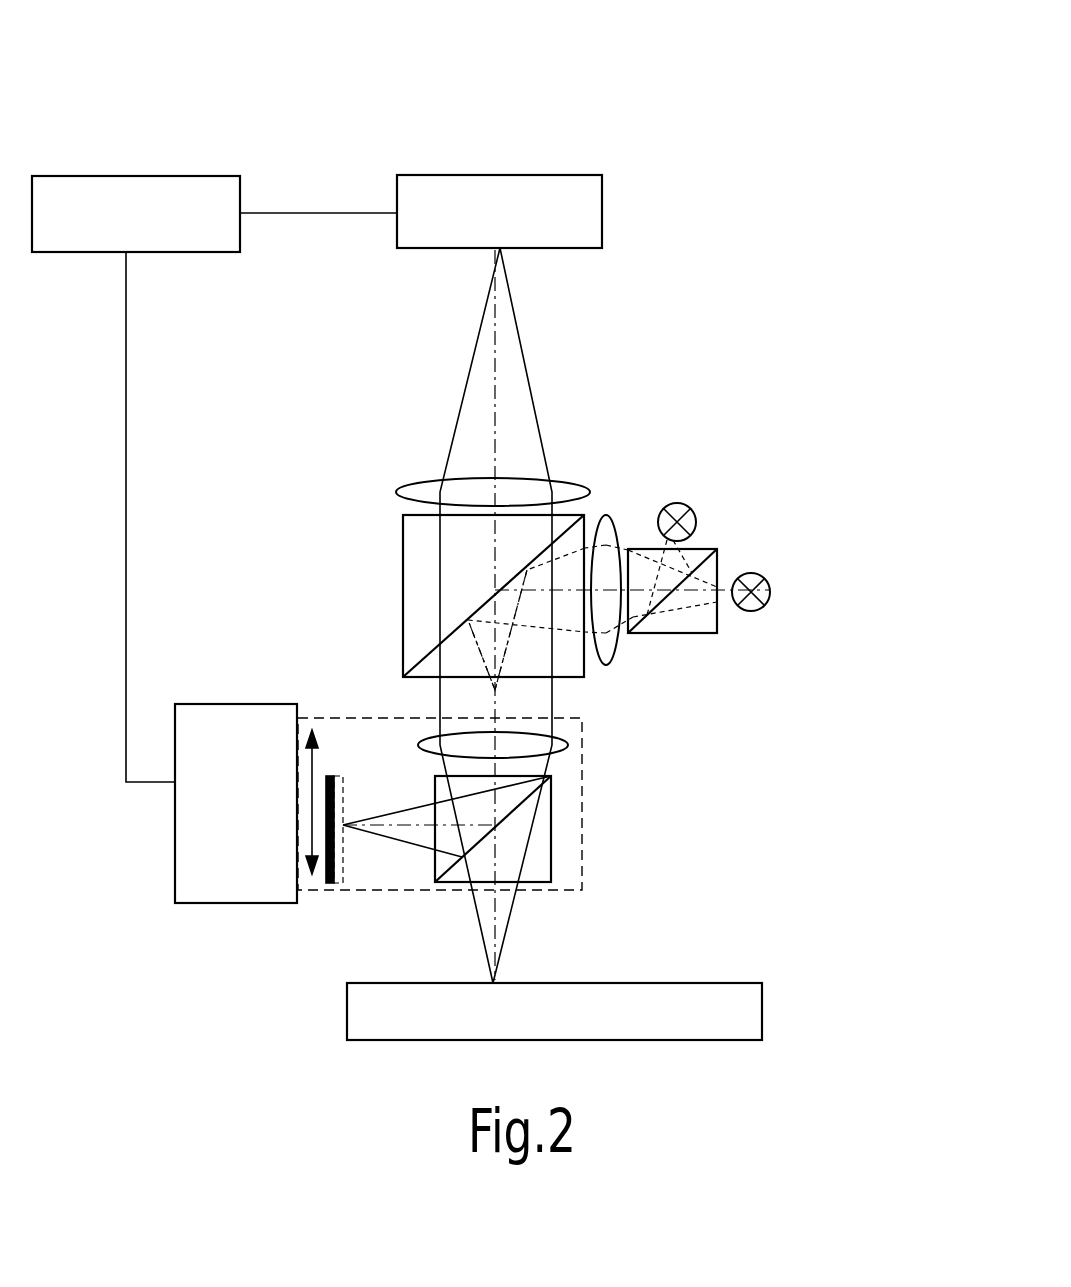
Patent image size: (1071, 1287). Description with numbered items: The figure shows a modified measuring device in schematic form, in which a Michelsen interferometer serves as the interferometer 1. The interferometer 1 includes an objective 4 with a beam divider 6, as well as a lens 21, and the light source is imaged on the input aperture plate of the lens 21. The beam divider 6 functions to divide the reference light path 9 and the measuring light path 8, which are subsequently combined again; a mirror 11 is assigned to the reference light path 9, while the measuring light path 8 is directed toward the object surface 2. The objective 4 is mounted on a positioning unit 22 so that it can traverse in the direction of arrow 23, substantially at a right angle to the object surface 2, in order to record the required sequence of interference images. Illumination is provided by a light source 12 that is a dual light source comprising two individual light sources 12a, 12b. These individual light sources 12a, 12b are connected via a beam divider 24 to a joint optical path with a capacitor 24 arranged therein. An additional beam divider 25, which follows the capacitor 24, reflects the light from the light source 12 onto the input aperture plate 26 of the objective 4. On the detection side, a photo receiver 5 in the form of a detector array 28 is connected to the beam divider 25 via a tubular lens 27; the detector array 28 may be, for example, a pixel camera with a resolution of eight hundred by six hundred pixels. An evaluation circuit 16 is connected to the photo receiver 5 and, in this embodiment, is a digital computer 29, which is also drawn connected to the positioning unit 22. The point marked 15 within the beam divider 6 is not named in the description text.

The interferometer 1 is at (833, 382).
The object surface 2 is at (735, 983).
The objective 4 is at (563, 787).
The photo receiver 5 is at (576, 150).
The beam divider 6 is at (515, 808).
The measuring light path 8 is at (514, 925).
The reference light path 9 is at (407, 807).
The mirror 11 is at (342, 842).
The light source 12 is at (799, 506).
The individual light source 12a is at (702, 498).
The individual light source 12b is at (792, 583).
The focal point in beam splitter 15 is at (493, 863).
The evaluation circuit 16 is at (236, 138).
The lens 21 is at (568, 747).
The positioning unit 22 is at (213, 883).
The arrow 23 is at (312, 812).
The beam divider / capacitor 24 is at (603, 518).
The beam divider 25 is at (402, 553).
The input aperture plate 26 is at (500, 692).
The tubular lens 27 is at (562, 480).
The detector array 28 is at (500, 228).
The digital computer 29 is at (158, 232).